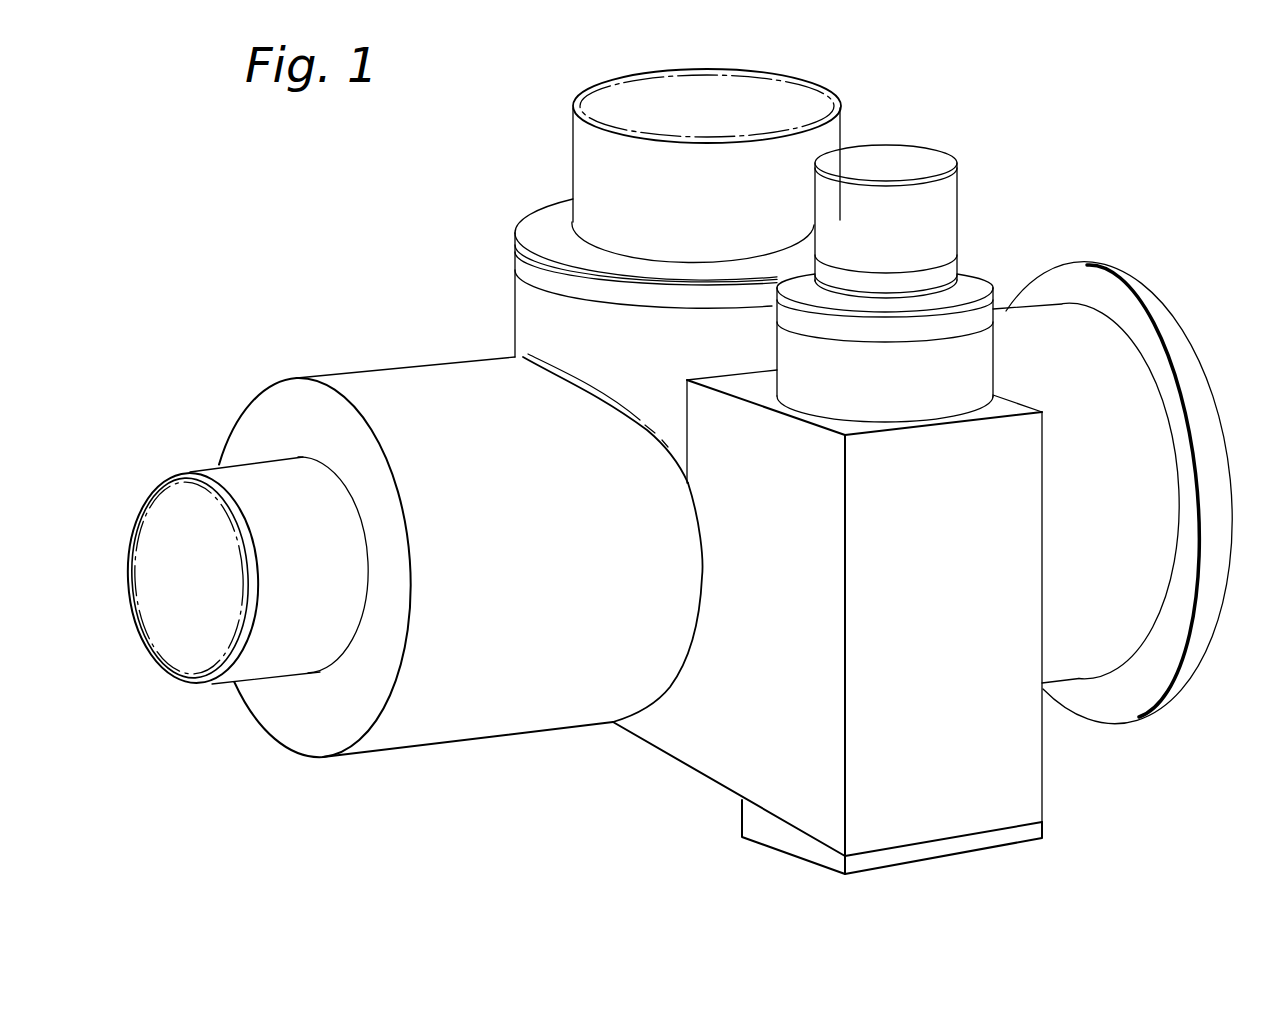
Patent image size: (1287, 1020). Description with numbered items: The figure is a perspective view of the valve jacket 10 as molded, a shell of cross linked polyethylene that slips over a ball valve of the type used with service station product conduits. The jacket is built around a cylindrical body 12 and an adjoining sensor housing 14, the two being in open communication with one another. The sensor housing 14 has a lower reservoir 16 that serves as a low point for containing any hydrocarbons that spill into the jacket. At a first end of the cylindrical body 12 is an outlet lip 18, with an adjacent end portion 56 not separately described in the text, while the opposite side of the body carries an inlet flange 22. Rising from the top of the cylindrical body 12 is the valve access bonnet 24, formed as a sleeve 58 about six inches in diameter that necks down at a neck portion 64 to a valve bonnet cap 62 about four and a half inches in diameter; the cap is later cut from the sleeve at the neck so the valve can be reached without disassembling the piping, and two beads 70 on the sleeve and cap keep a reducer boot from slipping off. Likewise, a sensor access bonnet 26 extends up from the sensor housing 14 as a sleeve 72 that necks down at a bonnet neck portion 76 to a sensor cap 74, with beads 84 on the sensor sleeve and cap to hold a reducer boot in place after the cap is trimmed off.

The valve jacket 10 is at (470, 232).
The cylindrical body 12 is at (423, 404).
The sensor housing 14 is at (1028, 750).
The lower reservoir 16 is at (940, 848).
The outlet lip 18 is at (283, 647).
The inlet flange 22 is at (1181, 360).
The valve access bonnet 24 is at (607, 167).
The sensor access bonnet 26 is at (1087, 263).
The inlet nipple 56 is at (220, 465).
The sleeve 58 is at (577, 332).
The valve bonnet cap 62 is at (797, 157).
The neck portion 64 is at (527, 213).
The beads 70 is at (570, 193).
The sleeve 72 is at (957, 280).
The sensor cap 74 is at (940, 202).
The bonnet neck portion 76 is at (963, 352).
The beads 84 is at (900, 345).